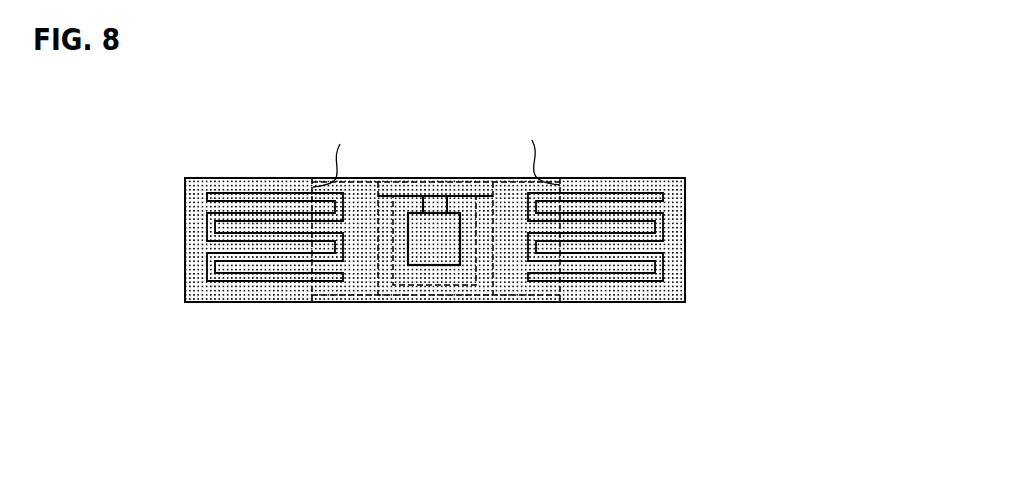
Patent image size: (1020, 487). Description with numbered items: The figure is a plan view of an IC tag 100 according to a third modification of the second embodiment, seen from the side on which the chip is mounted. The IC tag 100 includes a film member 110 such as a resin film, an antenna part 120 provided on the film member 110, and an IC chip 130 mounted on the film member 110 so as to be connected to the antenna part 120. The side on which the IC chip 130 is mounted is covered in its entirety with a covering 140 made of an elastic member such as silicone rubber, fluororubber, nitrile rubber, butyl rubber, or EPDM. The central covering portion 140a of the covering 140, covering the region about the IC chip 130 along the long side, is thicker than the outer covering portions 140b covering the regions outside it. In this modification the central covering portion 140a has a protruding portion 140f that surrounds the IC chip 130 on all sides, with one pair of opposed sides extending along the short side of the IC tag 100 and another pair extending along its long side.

The IC tag 100 is at (289, 89).
The film member 110 is at (590, 178).
The antenna part 120 is at (612, 292).
The IC chip 130 is at (442, 236).
The covering 140 is at (256, 203).
The central covering portion 140a is at (405, 208).
The outer covering portions 140b is at (268, 258).
The protruding portion 140f is at (447, 297).